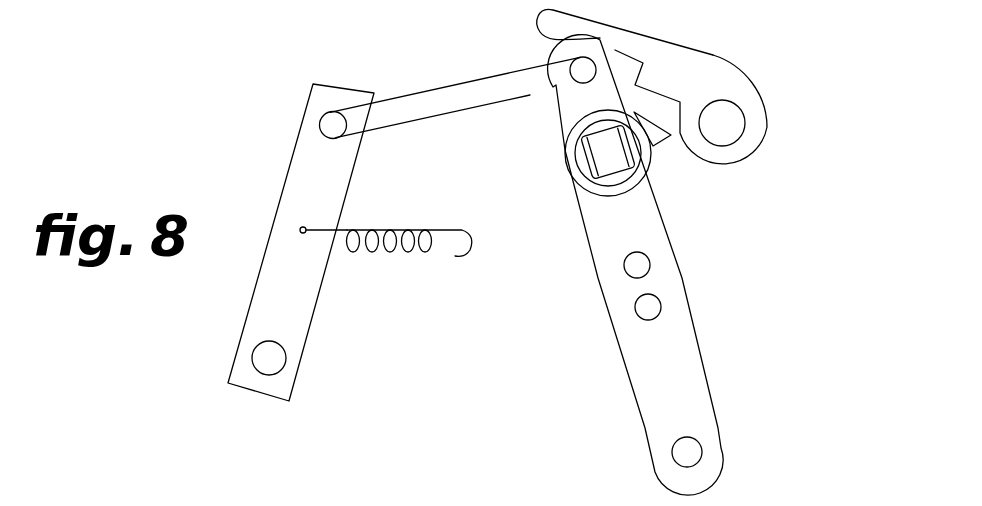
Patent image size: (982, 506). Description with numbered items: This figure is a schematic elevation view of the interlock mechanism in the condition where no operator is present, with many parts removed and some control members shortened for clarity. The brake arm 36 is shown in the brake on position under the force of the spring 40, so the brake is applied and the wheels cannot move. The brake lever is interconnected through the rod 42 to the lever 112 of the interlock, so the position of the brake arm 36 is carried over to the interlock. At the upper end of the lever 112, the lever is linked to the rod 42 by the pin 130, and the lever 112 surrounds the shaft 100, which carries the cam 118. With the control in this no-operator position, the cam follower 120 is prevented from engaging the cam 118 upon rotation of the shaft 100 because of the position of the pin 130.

The brake arm 36 is at (300, 162).
The rod 42 is at (490, 82).
The pin 130 is at (583, 70).
The lever 112 is at (640, 373).
The shaft 100 is at (608, 158).
The cam 118 is at (655, 150).
The cam follower 120 is at (697, 62).
The spring 40 is at (393, 247).